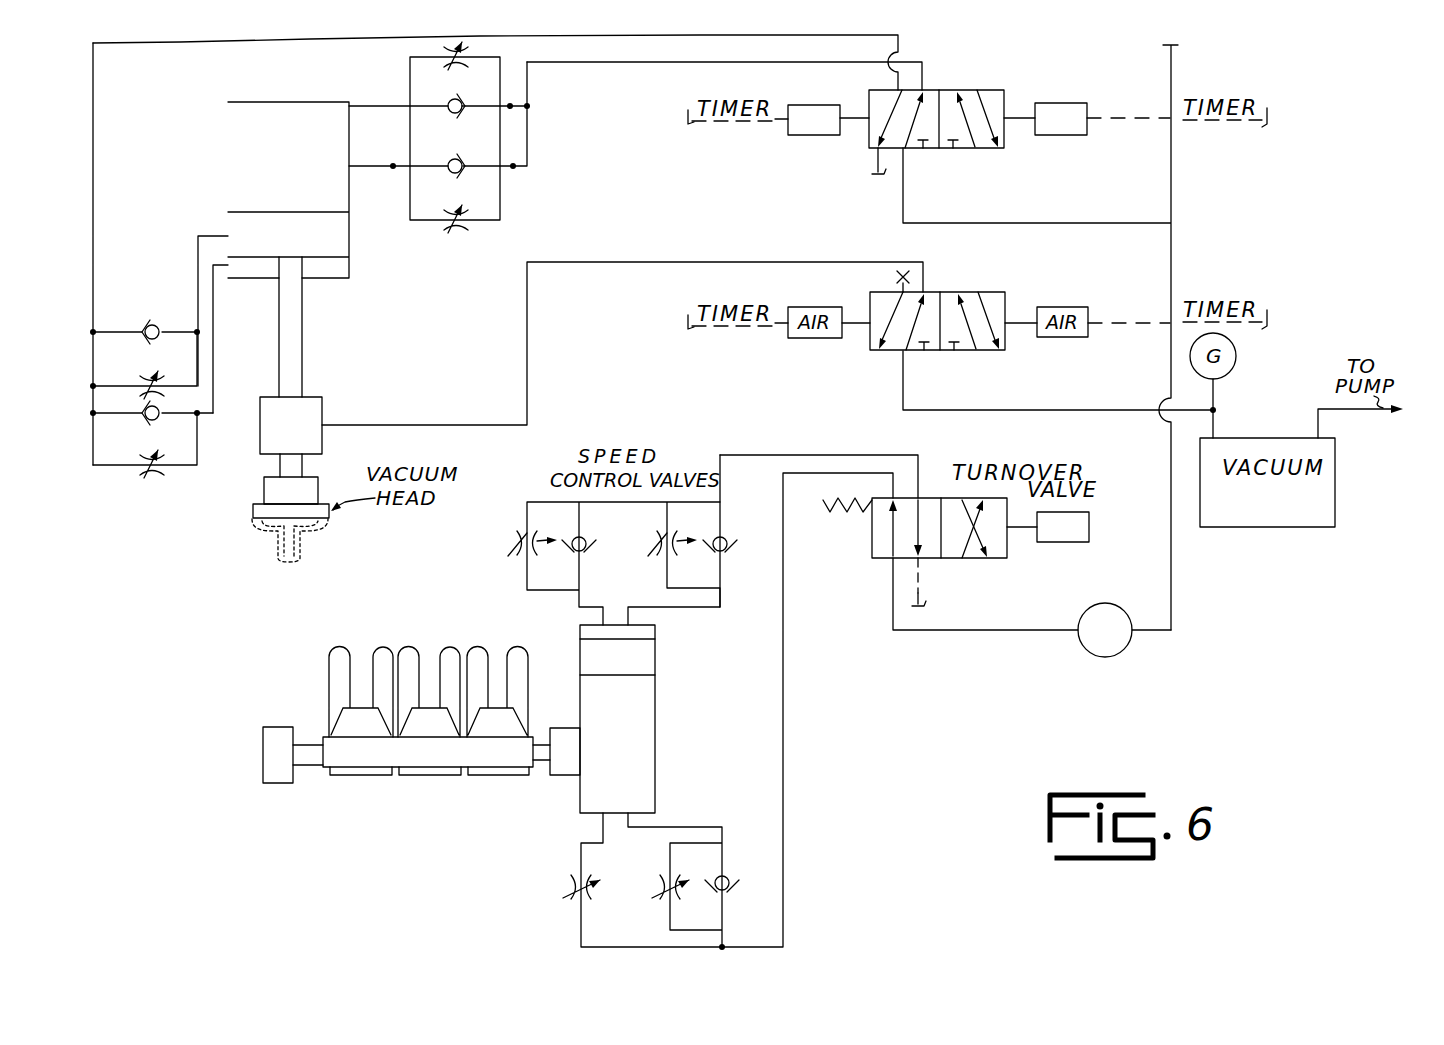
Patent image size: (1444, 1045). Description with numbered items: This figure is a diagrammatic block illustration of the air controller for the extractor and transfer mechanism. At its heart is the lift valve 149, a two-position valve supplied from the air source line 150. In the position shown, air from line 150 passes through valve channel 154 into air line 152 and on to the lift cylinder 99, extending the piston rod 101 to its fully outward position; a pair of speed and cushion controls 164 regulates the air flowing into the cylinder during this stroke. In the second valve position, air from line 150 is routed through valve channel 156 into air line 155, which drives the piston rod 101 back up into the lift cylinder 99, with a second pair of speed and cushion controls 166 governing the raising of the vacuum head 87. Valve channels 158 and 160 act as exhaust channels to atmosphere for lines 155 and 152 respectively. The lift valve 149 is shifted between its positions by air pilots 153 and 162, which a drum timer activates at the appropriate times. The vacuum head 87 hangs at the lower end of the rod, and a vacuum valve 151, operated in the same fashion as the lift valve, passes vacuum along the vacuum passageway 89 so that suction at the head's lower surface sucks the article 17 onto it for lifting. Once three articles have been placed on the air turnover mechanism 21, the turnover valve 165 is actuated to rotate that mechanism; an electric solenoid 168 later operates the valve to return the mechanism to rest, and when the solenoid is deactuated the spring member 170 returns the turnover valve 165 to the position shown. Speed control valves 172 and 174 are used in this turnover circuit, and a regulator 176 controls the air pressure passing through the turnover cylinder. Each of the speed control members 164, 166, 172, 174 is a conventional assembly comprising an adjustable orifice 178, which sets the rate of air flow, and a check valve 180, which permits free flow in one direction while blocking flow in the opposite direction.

The article 17 is at (270, 532).
The air turnover mechanism 21 is at (300, 688).
The vacuum head 87 is at (264, 489).
The vacuum passageway 89 is at (661, 261).
The air cylinder 99 is at (229, 137).
The piston rod 101 is at (302, 331).
The lift valve 149 is at (929, 128).
The air source line 150 is at (1170, 73).
The vacuum valve 151 is at (967, 291).
The air line 152 is at (913, 58).
The air pilot 153 is at (1067, 103).
The valve channel 154 is at (903, 133).
The air line 155 is at (706, 36).
The valve channel 156 is at (960, 110).
The valve channel 158 is at (883, 122).
The valve channel 160 is at (988, 110).
The air pilot 162 is at (829, 104).
The speed and cushion controls 164 is at (523, 164).
The turnover valve 165 is at (924, 496).
The speed and cushion controls 166 is at (163, 288).
The electric solenoid 168 is at (1058, 542).
The spring member 170 is at (842, 513).
The speed control valve 172 is at (498, 569).
The speed control valve 174 is at (526, 899).
The regulator 176 is at (1124, 647).
The adjustable orifice 178 is at (457, 235).
The check valve 180 is at (466, 160).